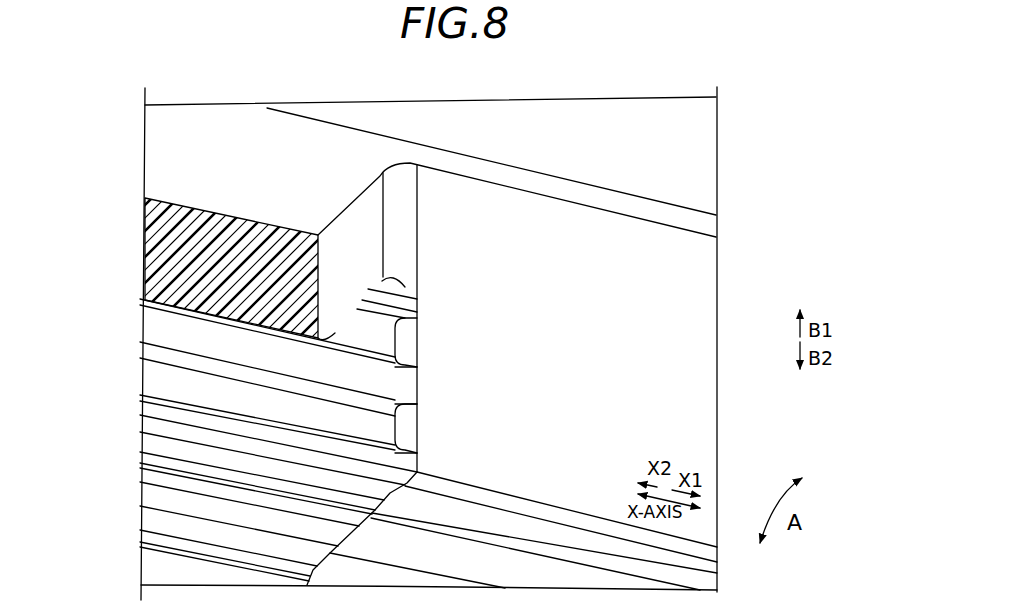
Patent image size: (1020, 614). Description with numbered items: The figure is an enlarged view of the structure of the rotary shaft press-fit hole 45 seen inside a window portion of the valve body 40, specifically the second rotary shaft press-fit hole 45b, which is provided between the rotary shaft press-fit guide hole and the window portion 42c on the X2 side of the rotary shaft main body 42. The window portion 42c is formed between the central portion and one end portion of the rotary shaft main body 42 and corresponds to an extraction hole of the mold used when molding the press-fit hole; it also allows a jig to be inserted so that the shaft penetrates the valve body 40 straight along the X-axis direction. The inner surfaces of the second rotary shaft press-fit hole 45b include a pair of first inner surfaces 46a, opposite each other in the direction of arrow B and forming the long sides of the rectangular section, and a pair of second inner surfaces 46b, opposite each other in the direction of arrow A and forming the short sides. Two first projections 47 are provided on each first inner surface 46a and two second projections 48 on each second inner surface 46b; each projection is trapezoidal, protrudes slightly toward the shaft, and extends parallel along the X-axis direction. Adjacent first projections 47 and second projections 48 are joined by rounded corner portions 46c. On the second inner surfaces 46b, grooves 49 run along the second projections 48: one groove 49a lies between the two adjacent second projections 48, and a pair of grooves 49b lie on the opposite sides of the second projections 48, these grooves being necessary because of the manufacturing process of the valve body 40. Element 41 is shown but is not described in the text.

The valve body 40 is at (783, 116).
The substrate (first face) 41 is at (634, 175).
The rotary shaft main body 42 is at (247, 180).
The window portion 42c is at (539, 220).
The rotary shaft press-fit hole 45 is at (442, 194).
The second rotary shaft press-fit hole 45b is at (374, 336).
The first inner surface 46a is at (343, 337).
The second inner surface 46b is at (603, 468).
The corner portion 46c is at (404, 282).
The first projection 47 is at (362, 307).
The second projection 48 is at (386, 340).
The groove 49 is at (480, 385).
The groove 49a is at (405, 387).
The groove 49b is at (410, 301).